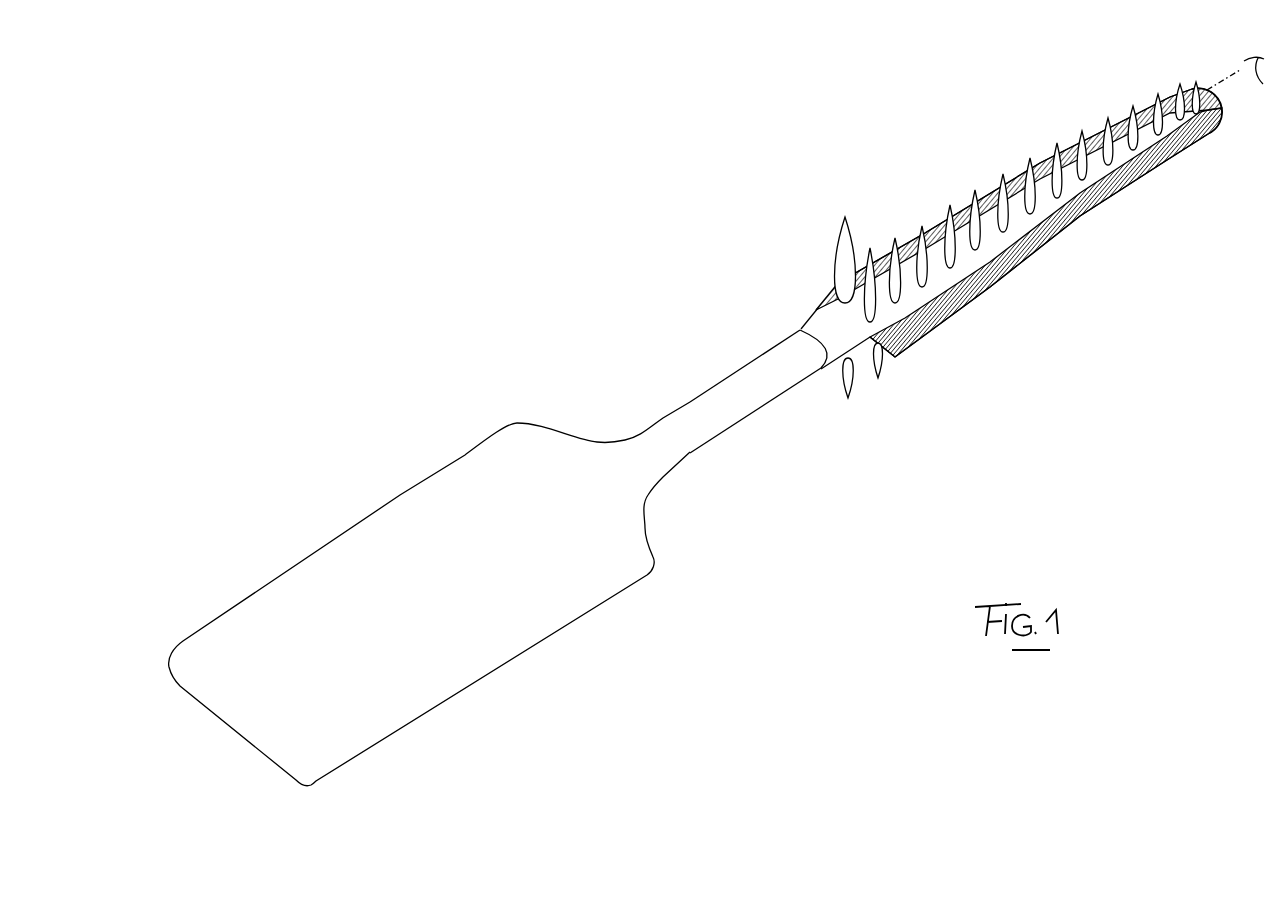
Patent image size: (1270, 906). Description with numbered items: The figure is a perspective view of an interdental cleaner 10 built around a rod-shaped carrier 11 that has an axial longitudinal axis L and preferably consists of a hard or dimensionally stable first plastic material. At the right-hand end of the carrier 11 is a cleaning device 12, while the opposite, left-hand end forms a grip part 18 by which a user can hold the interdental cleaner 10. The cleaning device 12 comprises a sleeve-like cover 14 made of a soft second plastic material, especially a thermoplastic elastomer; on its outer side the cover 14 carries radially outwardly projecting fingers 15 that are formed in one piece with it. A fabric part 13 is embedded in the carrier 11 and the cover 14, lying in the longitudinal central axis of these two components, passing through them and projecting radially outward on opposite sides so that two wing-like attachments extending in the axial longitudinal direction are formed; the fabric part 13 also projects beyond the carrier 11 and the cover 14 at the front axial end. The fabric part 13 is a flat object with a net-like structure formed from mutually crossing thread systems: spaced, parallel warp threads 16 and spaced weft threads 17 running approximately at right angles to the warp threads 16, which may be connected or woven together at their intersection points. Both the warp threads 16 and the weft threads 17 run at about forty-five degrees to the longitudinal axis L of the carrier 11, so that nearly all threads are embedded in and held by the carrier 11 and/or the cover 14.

The interdental cleaner 10 is at (402, 210).
The rod-shaped carrier 11 is at (706, 431).
The cleaning device 12 is at (989, 130).
The fabric part 13 is at (912, 364).
The sleeve-like cover 14 is at (801, 326).
The fingers 15 is at (892, 236).
The warp threads 16 is at (946, 326).
The weft threads 17 is at (979, 303).
The grip part 18 is at (326, 563).